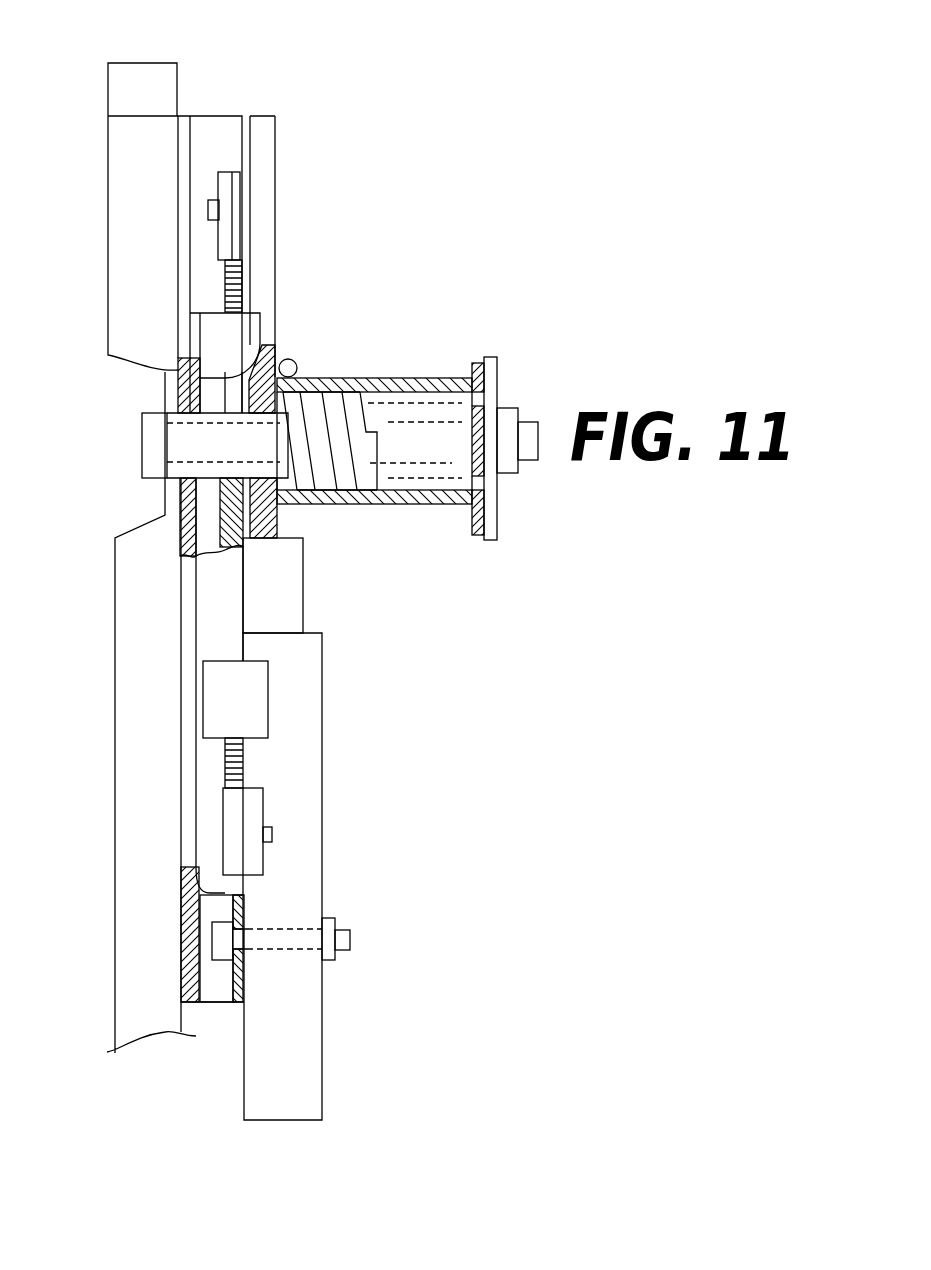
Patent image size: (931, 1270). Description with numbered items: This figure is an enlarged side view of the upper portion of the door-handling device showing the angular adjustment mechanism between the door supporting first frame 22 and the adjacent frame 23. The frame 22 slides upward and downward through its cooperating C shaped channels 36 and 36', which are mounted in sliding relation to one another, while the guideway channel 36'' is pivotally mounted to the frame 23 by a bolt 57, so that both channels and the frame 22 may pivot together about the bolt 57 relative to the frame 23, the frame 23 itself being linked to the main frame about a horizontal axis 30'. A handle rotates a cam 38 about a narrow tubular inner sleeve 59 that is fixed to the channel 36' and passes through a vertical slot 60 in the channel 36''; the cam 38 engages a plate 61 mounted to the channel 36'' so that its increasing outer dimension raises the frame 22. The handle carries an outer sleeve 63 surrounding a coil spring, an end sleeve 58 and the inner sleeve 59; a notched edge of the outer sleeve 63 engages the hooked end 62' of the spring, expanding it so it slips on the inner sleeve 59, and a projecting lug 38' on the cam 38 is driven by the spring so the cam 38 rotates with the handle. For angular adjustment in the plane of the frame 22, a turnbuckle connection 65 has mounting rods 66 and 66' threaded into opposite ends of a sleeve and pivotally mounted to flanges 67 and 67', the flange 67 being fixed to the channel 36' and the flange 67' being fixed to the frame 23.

The first frame 22 is at (127, 270).
The frame 23 is at (326, 722).
The horizontal axis 30' is at (331, 1007).
The C shaped channel 36 is at (220, 225).
The C shaped channel 36' is at (146, 521).
The guideway channel 36'' is at (318, 526).
The cam 38 is at (324, 246).
The projecting lug 38' is at (380, 419).
The bolt 57 is at (350, 940).
The end sleeve 58 is at (392, 408).
The inner sleeve 59 is at (180, 498).
The vertical slot 60 is at (222, 398).
The plate 61 is at (305, 578).
The hooked end 62' is at (328, 323).
The outer sleeve 63 is at (426, 502).
The turnbuckle connection 65 is at (272, 700).
The mounting rod 66 is at (282, 255).
The mounting rod 66' is at (312, 763).
The flange 67 is at (180, 216).
The flange 67' is at (311, 831).